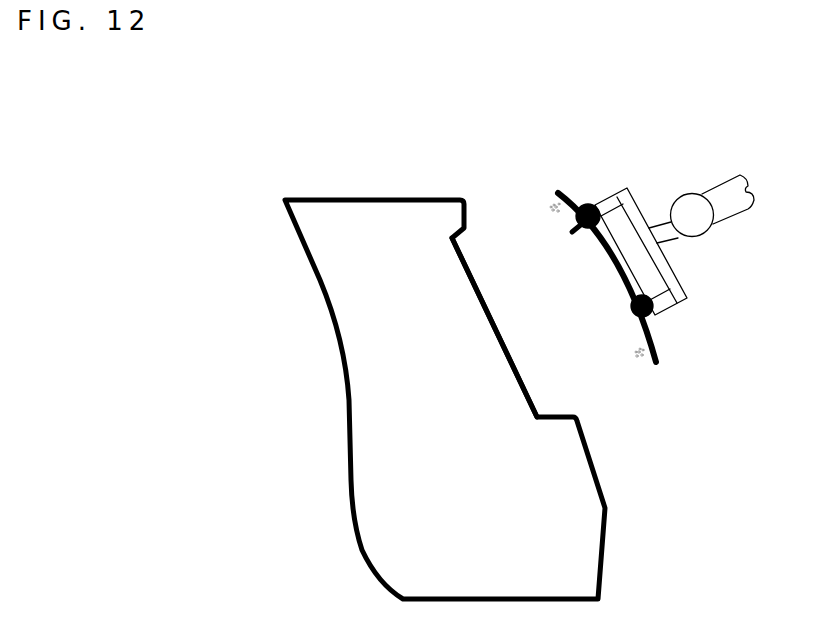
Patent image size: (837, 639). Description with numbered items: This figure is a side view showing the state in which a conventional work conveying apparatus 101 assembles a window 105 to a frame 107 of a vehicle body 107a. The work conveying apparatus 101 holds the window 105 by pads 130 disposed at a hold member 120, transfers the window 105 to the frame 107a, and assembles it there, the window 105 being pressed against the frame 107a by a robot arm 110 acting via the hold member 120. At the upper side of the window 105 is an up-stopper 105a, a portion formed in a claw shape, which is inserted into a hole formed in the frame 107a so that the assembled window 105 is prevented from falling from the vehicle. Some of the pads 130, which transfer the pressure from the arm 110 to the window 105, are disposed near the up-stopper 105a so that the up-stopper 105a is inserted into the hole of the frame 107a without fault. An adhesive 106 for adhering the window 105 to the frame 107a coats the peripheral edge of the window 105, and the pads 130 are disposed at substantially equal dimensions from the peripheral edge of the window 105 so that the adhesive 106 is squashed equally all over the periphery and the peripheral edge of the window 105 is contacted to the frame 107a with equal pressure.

The work conveying apparatus 101 is at (678, 162).
The window 105 is at (628, 296).
The up-stopper 105a is at (576, 236).
The adhesive 106 is at (554, 203).
The frame 107 is at (417, 198).
The vehicle body frame 107a is at (510, 350).
The robot arm 110 is at (740, 220).
The hold member 120 is at (675, 274).
The pads 130 is at (584, 204).